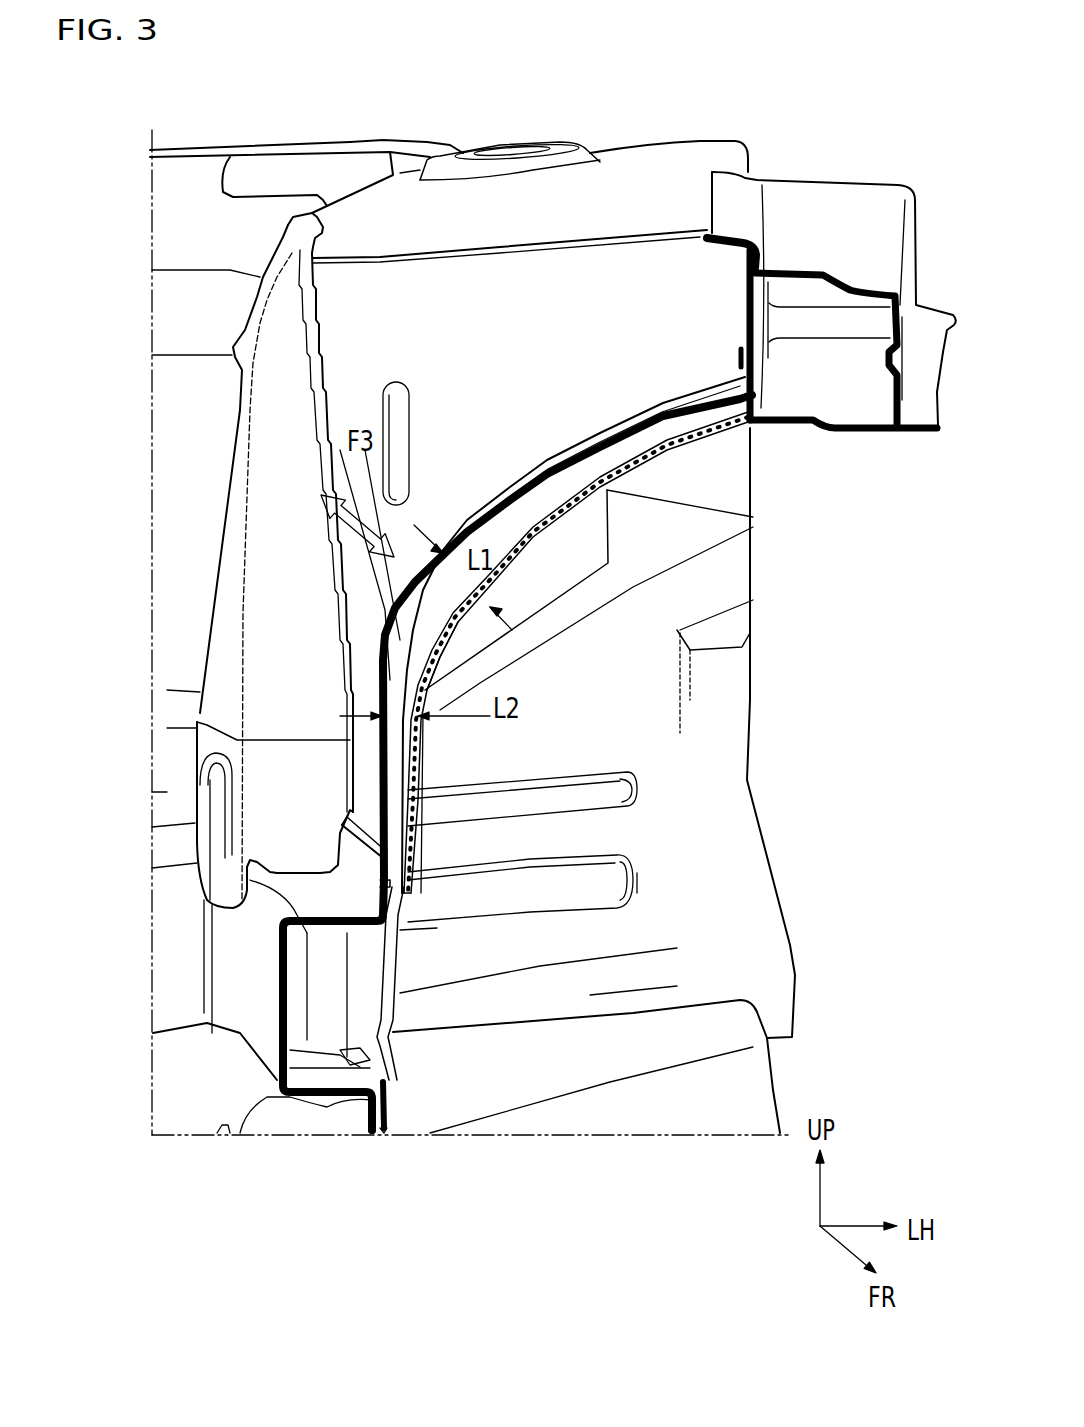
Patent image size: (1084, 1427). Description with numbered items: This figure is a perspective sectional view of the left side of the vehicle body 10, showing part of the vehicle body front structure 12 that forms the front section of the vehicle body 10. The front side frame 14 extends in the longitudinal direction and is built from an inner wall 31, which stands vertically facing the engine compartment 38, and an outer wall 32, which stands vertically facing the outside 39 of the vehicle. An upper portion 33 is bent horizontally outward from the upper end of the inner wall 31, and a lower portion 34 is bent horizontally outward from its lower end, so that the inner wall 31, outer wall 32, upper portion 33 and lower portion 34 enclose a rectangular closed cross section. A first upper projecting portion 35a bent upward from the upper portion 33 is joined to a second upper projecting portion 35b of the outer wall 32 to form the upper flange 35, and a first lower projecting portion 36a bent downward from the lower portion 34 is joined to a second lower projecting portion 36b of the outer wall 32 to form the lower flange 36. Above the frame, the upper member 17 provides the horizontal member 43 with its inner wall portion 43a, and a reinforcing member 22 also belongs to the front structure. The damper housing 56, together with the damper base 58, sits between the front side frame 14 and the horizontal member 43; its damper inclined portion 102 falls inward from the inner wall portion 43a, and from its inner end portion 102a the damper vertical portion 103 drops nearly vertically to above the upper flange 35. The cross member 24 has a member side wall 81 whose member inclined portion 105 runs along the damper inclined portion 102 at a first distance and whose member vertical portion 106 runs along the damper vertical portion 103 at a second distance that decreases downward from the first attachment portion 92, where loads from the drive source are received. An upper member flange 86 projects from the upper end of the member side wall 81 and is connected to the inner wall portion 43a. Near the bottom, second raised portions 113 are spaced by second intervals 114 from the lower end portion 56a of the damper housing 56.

The vehicle body 10 is at (306, 120).
The vehicle body front structure 12 is at (387, 143).
The front side frame 14 is at (230, 976).
The upper member 17 is at (834, 276).
The reinforcing member 22 is at (235, 462).
The cross member 24 is at (547, 462).
The inner wall 31 is at (278, 1005).
The outer wall 32 is at (370, 950).
The upper portion 33 is at (297, 898).
The lower portion 34 is at (328, 1076).
The upper flange 35 is at (92, 740).
The first upper projecting portion 35a is at (337, 858).
The second upper projecting portion 35b is at (355, 815).
The lower flange 36 is at (377, 1171).
The first lower projecting portion 36a is at (370, 1118).
The second lower projecting portion 36b is at (385, 1107).
The engine compartment 38 is at (112, 1051).
The outside of the vehicle 39 is at (897, 643).
The horizontal member 43 is at (812, 190).
The inner wall portion 43a is at (740, 320).
The damper housing 56 is at (645, 458).
The lower end portion 56a is at (408, 890).
The damper base 58 is at (642, 165).
The member side wall 81 is at (511, 488).
The upper member flange 86 is at (740, 362).
The first attachment portion 92 is at (403, 587).
The damper inclined portion 102 is at (593, 489).
The inner end portion 102a is at (443, 633).
The damper vertical portion 103 is at (407, 750).
The member inclined portion 105 is at (583, 455).
The member vertical portion 106 is at (375, 752).
The second raised portions 113 is at (392, 862).
The second intervals 114 is at (408, 878).